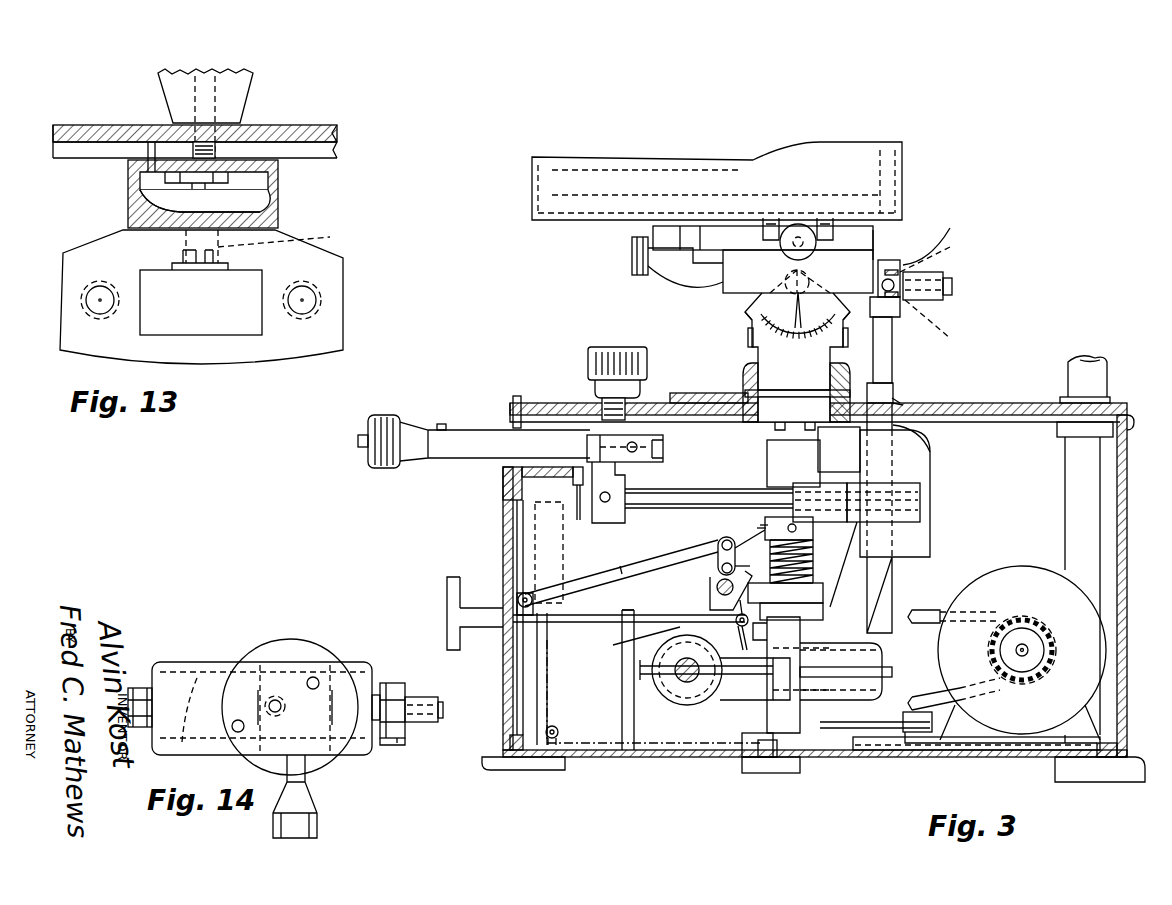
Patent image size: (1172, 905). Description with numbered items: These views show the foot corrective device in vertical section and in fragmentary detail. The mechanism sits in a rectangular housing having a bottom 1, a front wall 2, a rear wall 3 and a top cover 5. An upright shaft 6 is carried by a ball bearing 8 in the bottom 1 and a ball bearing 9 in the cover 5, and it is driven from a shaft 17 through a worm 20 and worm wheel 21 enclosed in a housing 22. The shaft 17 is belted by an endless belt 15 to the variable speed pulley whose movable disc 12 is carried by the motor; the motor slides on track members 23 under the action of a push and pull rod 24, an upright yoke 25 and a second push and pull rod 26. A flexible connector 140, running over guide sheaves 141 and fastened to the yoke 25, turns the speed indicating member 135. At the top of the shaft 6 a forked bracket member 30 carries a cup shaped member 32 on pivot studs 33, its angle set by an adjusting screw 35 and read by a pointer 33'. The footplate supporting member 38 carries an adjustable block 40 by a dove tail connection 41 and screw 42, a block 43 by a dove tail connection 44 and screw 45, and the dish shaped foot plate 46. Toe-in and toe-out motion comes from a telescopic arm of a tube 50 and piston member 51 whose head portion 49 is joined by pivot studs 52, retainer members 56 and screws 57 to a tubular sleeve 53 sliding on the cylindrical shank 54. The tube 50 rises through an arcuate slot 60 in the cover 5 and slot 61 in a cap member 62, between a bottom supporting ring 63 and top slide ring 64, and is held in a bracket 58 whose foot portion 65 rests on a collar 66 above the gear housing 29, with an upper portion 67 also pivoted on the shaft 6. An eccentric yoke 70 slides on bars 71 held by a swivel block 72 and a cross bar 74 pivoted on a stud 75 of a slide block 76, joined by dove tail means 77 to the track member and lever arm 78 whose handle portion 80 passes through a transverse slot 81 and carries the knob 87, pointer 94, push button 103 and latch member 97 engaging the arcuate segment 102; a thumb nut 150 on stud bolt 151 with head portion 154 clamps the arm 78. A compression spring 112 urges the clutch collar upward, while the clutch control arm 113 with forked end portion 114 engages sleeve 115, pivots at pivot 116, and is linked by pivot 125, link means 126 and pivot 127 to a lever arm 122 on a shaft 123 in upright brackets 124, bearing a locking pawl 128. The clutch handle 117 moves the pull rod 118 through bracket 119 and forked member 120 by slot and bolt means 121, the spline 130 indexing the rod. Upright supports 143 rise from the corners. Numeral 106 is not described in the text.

In FIG. 3, the bottom 1 is at (676, 758).
In FIG. 3, the front wall 2 is at (504, 541).
In FIG. 3, the rear wall 3 is at (1128, 503).
In FIG. 13, the top portion or cover 5 is at (306, 134).
In FIG. 3, the top portion or cover 5 is at (1038, 412).
In FIG. 3, the upright post or shaft 6 is at (772, 426).
In FIG. 3, the ball bearing 8 is at (765, 758).
In FIG. 3, the ball bearing 9 is at (846, 395).
In FIG. 3, the disc 12 is at (1035, 578).
In FIG. 3, the endless belt 15 is at (939, 606).
In FIG. 3, the shaft 17 is at (678, 706).
In FIG. 3, the worm 20 is at (728, 706).
In FIG. 3, the worm wheel 21 is at (754, 696).
In FIG. 3, the housing 22 is at (745, 742).
In FIG. 3, the track member 23 is at (930, 751).
In FIG. 3, the push and pull rod 24 is at (880, 733).
In FIG. 3, the upright yoke 25 is at (790, 774).
In FIG. 3, the push and pull rod 26 is at (760, 631).
In FIG. 3, the gear housing 29 is at (884, 648).
In FIG. 3, the forked bracket member 30 is at (750, 314).
In FIG. 3, the cup shaped member 32 is at (748, 300).
In FIG. 3, the pivot stud 33 is at (815, 280).
In FIG. 3, the pointer 33' is at (801, 313).
In FIG. 3, the adjusting screw 35 is at (742, 340).
In FIG. 14, the footplate supporting member 38 is at (283, 641).
In FIG. 3, the footplate supporting member 38 is at (726, 280).
In FIG. 3, the adjustable block 40 is at (741, 232).
In FIG. 14, the dove tail connection 41 is at (197, 700).
In FIG. 14, the screw 42 is at (138, 690).
In FIG. 3, the screw 42 is at (670, 266).
In FIG. 3, the block 43 is at (876, 233).
In FIG. 14, the dove tail connection 44 is at (305, 670).
In FIG. 3, the dove tail connection 44 is at (832, 236).
In FIG. 14, the screw 45 is at (310, 820).
In FIG. 3, the screw 45 is at (798, 226).
In FIG. 3, the dish shaped foot plate 46 is at (904, 192).
In FIG. 14, the head portion 49 is at (384, 742).
In FIG. 3, the head portion 49 is at (884, 320).
In FIG. 3, the tube 50 is at (892, 392).
In FIG. 3, the piston member 51 is at (884, 356).
In FIG. 14, the pivot stud 52 is at (390, 683).
In FIG. 3, the pivot stud 52 is at (903, 298).
In FIG. 14, the tubular sleeve 53 is at (425, 691).
In FIG. 3, the tubular sleeve 53 is at (944, 281).
In FIG. 14, the cylindrical shank 54 is at (373, 708).
In FIG. 3, the cylindrical shank 54 is at (952, 290).
In FIG. 14, the retainer member 56 is at (400, 742).
In FIG. 3, the retainer member 56 is at (948, 236).
In FIG. 3, the screw 57 is at (942, 295).
In FIG. 3, the bracket 58 is at (930, 547).
In FIG. 3, the arcuate slot 60 is at (925, 438).
In FIG. 3, the arcuate slot 61 is at (896, 398).
In FIG. 3, the cap member 62 is at (746, 391).
In FIG. 3, the bottom supporting ring 63 is at (708, 395).
In FIG. 3, the top slide ring 64 is at (899, 403).
In FIG. 3, the foot portion 65 is at (810, 597).
In FIG. 3, the collar 66 is at (823, 622).
In FIG. 3, the upper portion 67 is at (828, 471).
In FIG. 3, the eccentric yoke 70 is at (808, 480).
In FIG. 13, the rods or bars 71 is at (98, 299).
In FIG. 3, the rods or bars 71 is at (712, 492).
In FIG. 3, the swivel block 72 is at (903, 487).
In FIG. 13, the cross bar 74 is at (88, 250).
In FIG. 3, the cross bar 74 is at (620, 570).
In FIG. 13, the stud 75 is at (306, 242).
In FIG. 13, the slide block 76 is at (262, 215).
In FIG. 3, the slide block 76 is at (624, 466).
In FIG. 13, the dove tail means 77 is at (262, 185).
In FIG. 13, the track member and lever arm 78 is at (152, 166).
In FIG. 3, the track member and lever arm 78 is at (705, 431).
In FIG. 3, the handle portion 80 is at (478, 459).
In FIG. 3, the transverse slot 81 is at (512, 469).
In FIG. 3, the knob 87 is at (406, 470).
In FIG. 3, the pointer 94 is at (441, 424).
In FIG. 3, the latch member 97 is at (578, 490).
In FIG. 3, the arcuate segment 102 is at (575, 480).
In FIG. 3, the push button 103 is at (361, 448).
In FIG. 3, the bracket 106 is at (514, 398).
In FIG. 3, the compression spring 112 is at (813, 566).
In FIG. 3, the clutch control arm 113 is at (652, 570).
In FIG. 3, the forked end portion 114 is at (762, 527).
In FIG. 3, the sleeve 115 is at (845, 506).
In FIG. 3, the pivot 116 is at (527, 593).
In FIG. 3, the clutch handle 117 is at (453, 594).
In FIG. 3, the pull rod 118 is at (570, 625).
In FIG. 3, the bracket 119 is at (622, 700).
In FIG. 3, the forked member 120 is at (622, 647).
In FIG. 3, the slot and bolt means 121 is at (743, 627).
In FIG. 3, the lever arm 122 is at (718, 607).
In FIG. 3, the shaft 123 is at (717, 588).
In FIG. 3, the upright bracket 124 is at (700, 741).
In FIG. 3, the pivot 125 is at (758, 528).
In FIG. 3, the link means 126 is at (718, 546).
In FIG. 3, the pivot 127 is at (718, 572).
In FIG. 3, the locking pawl 128 is at (736, 549).
In FIG. 3, the longitudinal spline 130 is at (638, 609).
In FIG. 3, the speed indicating member 135 is at (563, 559).
In FIG. 3, the flexible connector 140 is at (550, 690).
In FIG. 3, the guide sheave 141 is at (555, 727).
In FIG. 3, the support 143 is at (1108, 380).
In FIG. 13, the thumb nut 150 is at (238, 97).
In FIG. 3, the thumb nut 150 is at (620, 362).
In FIG. 13, the stud bolt 151 is at (222, 140).
In FIG. 13, the head portion 154 is at (150, 196).